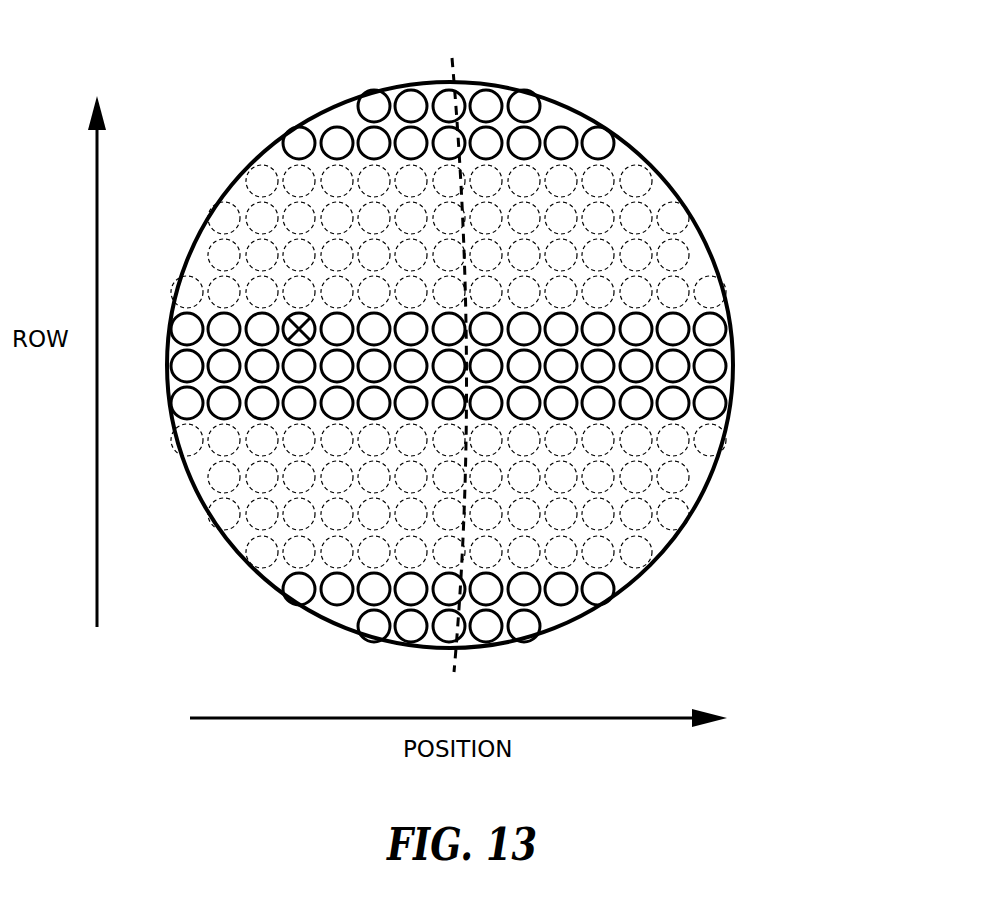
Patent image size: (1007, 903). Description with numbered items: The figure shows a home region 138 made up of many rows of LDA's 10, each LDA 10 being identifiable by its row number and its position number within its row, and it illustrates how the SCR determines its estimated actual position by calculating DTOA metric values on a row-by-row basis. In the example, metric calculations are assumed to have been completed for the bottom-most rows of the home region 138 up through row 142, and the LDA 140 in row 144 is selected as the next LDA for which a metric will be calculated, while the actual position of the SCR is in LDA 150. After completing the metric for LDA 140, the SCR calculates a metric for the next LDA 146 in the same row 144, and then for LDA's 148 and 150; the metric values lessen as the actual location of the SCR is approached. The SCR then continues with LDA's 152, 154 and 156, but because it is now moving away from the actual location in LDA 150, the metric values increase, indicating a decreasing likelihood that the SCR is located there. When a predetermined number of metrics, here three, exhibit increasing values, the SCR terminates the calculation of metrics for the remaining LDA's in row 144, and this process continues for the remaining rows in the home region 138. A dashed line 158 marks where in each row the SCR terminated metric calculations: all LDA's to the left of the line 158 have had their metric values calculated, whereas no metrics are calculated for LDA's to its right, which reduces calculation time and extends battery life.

The home region 138 is at (638, 150).
The LDA 10 is at (637, 321).
The LDA 140 is at (187, 321).
The row 142 is at (760, 366).
The row 144 is at (498, 179).
The LDA 146 is at (224, 321).
The LDA 148 is at (262, 321).
The LDA 150 is at (299, 321).
The LDA 152 is at (337, 321).
The LDA 154 is at (374, 321).
The LDA 156 is at (411, 321).
The dashed line 158 is at (468, 463).